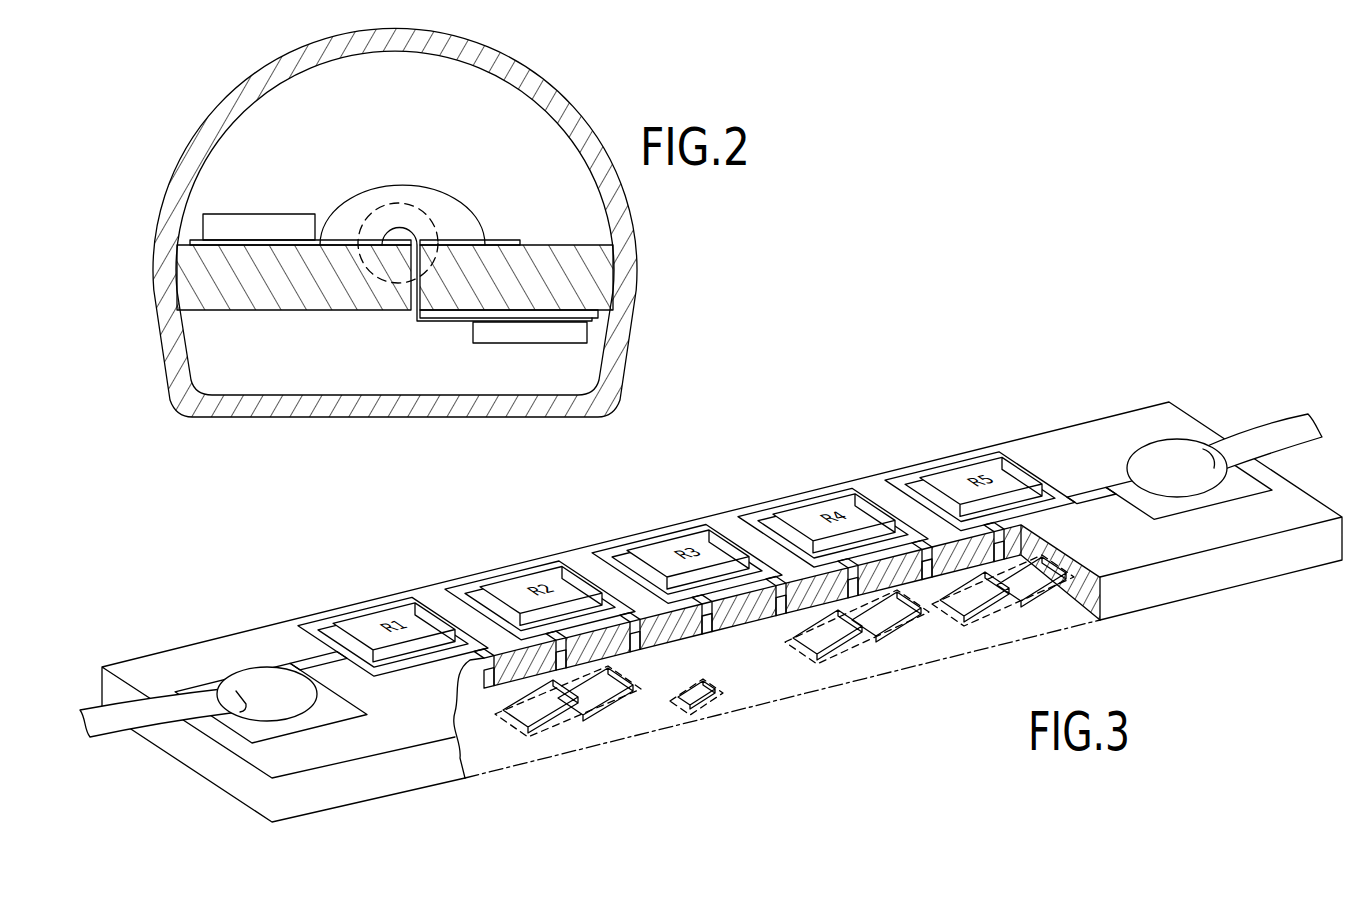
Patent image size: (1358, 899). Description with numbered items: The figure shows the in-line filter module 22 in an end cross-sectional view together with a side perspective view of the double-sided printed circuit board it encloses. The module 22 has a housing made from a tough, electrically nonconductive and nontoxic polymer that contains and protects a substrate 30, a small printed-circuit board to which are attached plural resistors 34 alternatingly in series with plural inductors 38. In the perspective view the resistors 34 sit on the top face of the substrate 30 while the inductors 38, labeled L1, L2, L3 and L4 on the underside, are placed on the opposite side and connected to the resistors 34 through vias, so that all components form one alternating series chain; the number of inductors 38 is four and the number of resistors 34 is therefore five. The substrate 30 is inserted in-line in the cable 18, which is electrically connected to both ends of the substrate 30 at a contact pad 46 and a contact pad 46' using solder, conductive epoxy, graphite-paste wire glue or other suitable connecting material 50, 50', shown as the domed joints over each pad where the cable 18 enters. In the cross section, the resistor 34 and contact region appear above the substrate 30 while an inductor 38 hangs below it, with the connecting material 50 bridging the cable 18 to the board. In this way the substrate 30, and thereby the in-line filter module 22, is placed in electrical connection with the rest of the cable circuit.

In FIG. 3, the cable 18 is at (156, 722).
In FIG. 2, the in-line filter module 22 is at (598, 122).
In FIG. 2, the substrate 30 is at (355, 293).
In FIG. 3, the substrate 30 is at (333, 788).
In FIG. 2, the resistors 34 is at (266, 215).
In FIG. 3, the resistors 34 is at (433, 622).
In FIG. 2, the inductors 38 is at (522, 345).
In FIG. 3, the inductors 38 is at (1027, 625).
In FIG. 2, the contact pad 46 is at (378, 226).
In FIG. 3, the contact pad 46 is at (295, 703).
In FIG. 3, the contact pad 46' is at (1176, 499).
In FIG. 2, the connecting material 50 is at (403, 228).
In FIG. 3, the connecting material 50 is at (265, 657).
In FIG. 3, the connecting material 50' is at (1153, 441).
In FIG. 3, the light emitter L1 is at (587, 733).
In FIG. 3, the light emitter L2 is at (697, 707).
In FIG. 3, the light emitter L3 is at (870, 663).
In FIG. 3, the light emitter L4 is at (1017, 636).